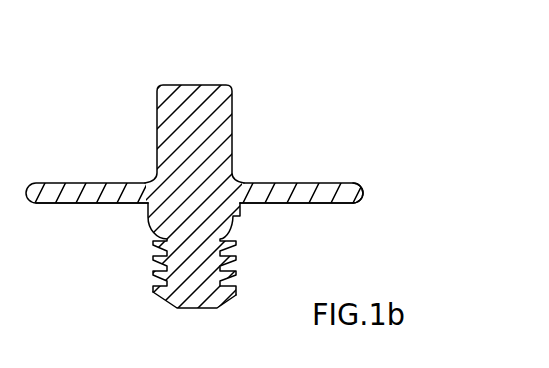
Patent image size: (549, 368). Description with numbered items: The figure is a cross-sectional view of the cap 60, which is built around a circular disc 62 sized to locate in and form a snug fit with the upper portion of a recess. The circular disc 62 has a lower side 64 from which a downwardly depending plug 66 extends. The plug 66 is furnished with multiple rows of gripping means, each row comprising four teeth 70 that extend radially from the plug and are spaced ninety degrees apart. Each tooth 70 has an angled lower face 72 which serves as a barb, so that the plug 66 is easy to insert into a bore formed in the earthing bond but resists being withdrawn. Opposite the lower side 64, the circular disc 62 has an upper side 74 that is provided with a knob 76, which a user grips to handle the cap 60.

The cap 60 is at (240, 52).
The circular disc 62 is at (353, 190).
The lower side 64 is at (323, 206).
The plug 66 is at (147, 215).
The teeth 70 is at (150, 245).
The angled lower face 72 is at (154, 296).
The upper side 74 is at (65, 183).
The knob 76 is at (183, 107).